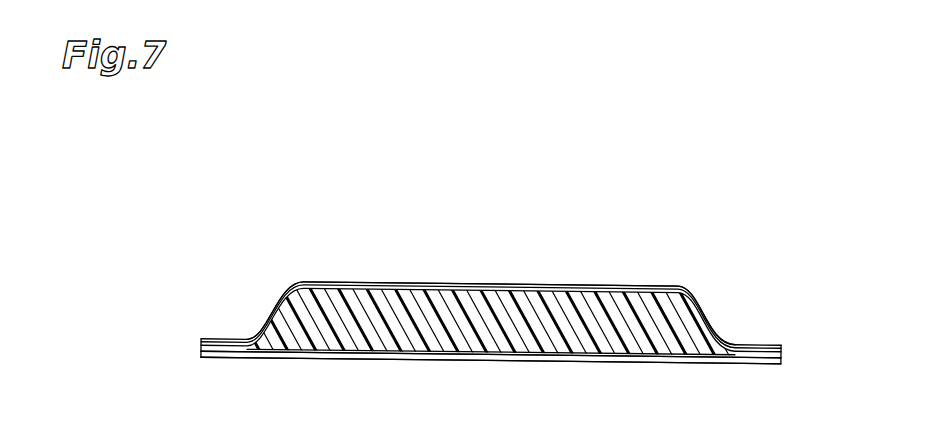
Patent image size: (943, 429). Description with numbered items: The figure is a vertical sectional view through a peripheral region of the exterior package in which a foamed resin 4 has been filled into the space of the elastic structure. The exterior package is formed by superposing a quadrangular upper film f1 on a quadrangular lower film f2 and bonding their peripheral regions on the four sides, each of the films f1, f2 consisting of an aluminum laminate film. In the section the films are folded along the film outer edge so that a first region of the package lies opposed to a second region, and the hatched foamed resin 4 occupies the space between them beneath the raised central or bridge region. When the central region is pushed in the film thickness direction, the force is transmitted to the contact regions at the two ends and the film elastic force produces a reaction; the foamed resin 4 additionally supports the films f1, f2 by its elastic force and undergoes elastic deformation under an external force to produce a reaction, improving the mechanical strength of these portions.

The upper film f1 is at (532, 286).
The lower film f2 is at (572, 286).
The foamed resin 4 is at (622, 322).